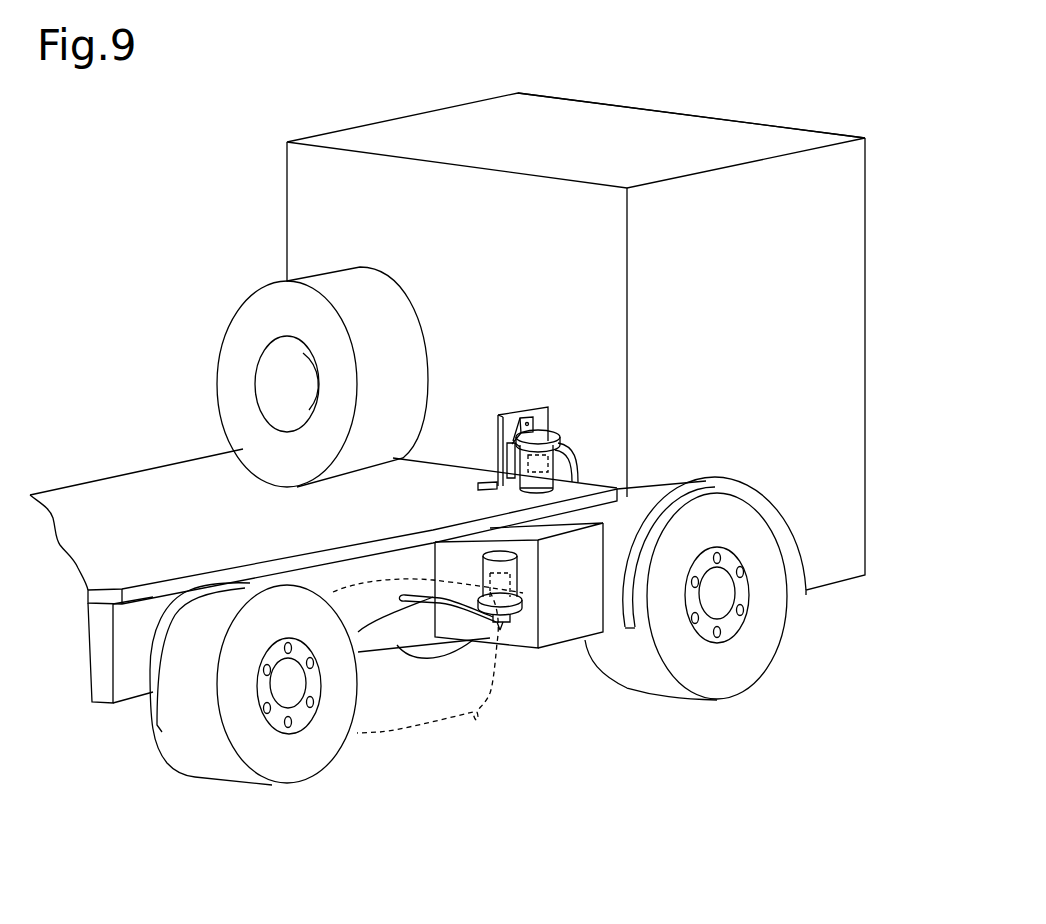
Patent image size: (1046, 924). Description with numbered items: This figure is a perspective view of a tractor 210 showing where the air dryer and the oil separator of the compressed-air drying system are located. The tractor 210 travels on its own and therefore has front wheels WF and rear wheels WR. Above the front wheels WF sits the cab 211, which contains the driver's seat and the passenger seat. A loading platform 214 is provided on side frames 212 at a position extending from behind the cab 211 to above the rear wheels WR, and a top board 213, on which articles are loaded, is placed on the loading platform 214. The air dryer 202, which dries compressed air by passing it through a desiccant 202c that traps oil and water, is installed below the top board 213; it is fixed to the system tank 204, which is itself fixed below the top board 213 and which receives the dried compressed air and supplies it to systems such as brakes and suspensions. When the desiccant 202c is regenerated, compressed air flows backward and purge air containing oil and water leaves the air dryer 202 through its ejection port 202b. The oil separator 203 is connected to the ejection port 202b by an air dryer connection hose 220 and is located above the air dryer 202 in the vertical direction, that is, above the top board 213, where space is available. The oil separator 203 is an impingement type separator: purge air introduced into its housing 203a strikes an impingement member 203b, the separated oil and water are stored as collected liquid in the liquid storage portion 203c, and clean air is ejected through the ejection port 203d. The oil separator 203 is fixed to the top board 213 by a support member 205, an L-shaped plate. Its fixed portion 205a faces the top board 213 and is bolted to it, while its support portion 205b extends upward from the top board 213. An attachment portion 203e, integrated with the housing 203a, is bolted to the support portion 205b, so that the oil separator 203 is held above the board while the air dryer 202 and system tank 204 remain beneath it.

The tractor 210 is at (751, 120).
The cab 211 is at (428, 112).
The side frames 212 is at (105, 703).
The top board 213 is at (145, 605).
The loading platform 214 is at (188, 433).
The air dryer connection hose 220 is at (403, 594).
The air dryer 202 is at (528, 559).
The ejection port 202b is at (513, 632).
The desiccant 202c is at (521, 600).
The oil separator 203 is at (532, 433).
The housing 203a is at (566, 465).
The impingement member 203b is at (560, 436).
The liquid storage portion 203c is at (527, 490).
The ejection port 203d is at (507, 455).
The attachment portion 203e is at (525, 418).
The system tank 204 is at (480, 718).
The support member 205 is at (498, 418).
The fixed portion 205a is at (480, 483).
The support portion 205b is at (498, 421).
The front wheels WF is at (730, 697).
The rear wheels WR is at (325, 770).